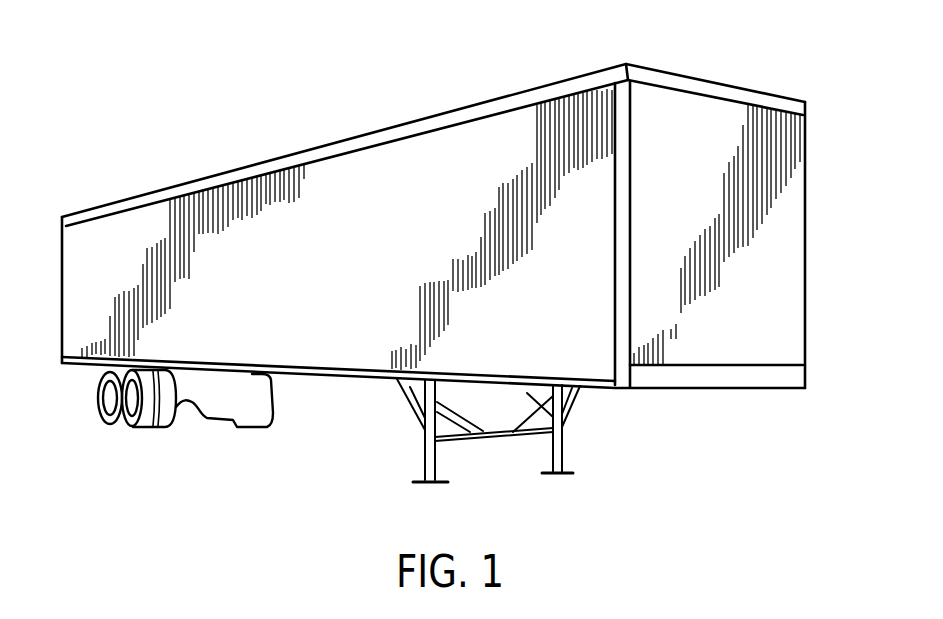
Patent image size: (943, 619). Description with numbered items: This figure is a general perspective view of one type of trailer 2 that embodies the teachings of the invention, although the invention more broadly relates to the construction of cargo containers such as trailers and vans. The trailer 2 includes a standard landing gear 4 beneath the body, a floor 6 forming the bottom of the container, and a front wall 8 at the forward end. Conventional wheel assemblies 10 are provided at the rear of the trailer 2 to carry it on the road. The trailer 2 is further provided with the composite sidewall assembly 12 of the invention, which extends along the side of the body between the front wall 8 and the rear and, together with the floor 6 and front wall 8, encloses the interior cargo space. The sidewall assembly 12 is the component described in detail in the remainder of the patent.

The trailer 2 is at (280, 132).
The landing gear 4 is at (497, 438).
The floor 6 is at (707, 388).
The front wall 8 is at (741, 212).
The wheel assemblies 10 is at (122, 421).
The sidewall assembly 12 is at (345, 278).